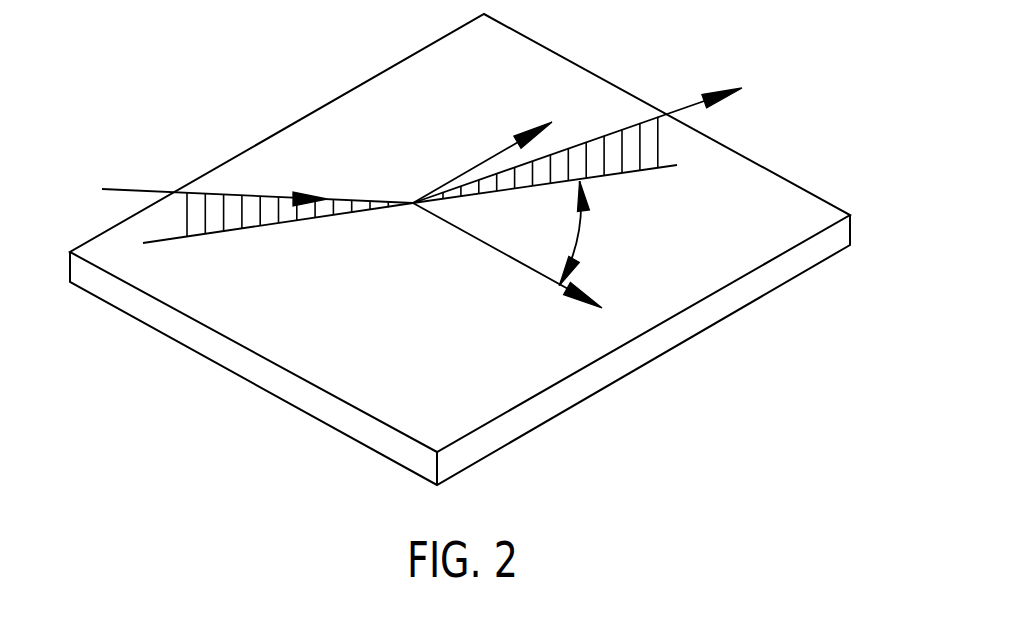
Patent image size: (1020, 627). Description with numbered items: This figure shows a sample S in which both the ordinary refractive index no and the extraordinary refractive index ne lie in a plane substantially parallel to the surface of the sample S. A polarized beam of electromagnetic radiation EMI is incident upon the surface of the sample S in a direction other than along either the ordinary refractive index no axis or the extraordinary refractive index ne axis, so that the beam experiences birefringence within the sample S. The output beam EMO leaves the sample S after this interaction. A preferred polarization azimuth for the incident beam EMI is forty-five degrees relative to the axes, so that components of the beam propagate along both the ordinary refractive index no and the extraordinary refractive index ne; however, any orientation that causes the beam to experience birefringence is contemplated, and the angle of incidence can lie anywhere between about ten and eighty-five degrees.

The sample S is at (300, 425).
The incident electromagnetic beam EMI is at (240, 181).
The outgoing (extraordinary) electromagnetic wave EMO is at (631, 122).
The extraordinary refractive index ne is at (512, 147).
The ordinary refractive index no is at (507, 282).